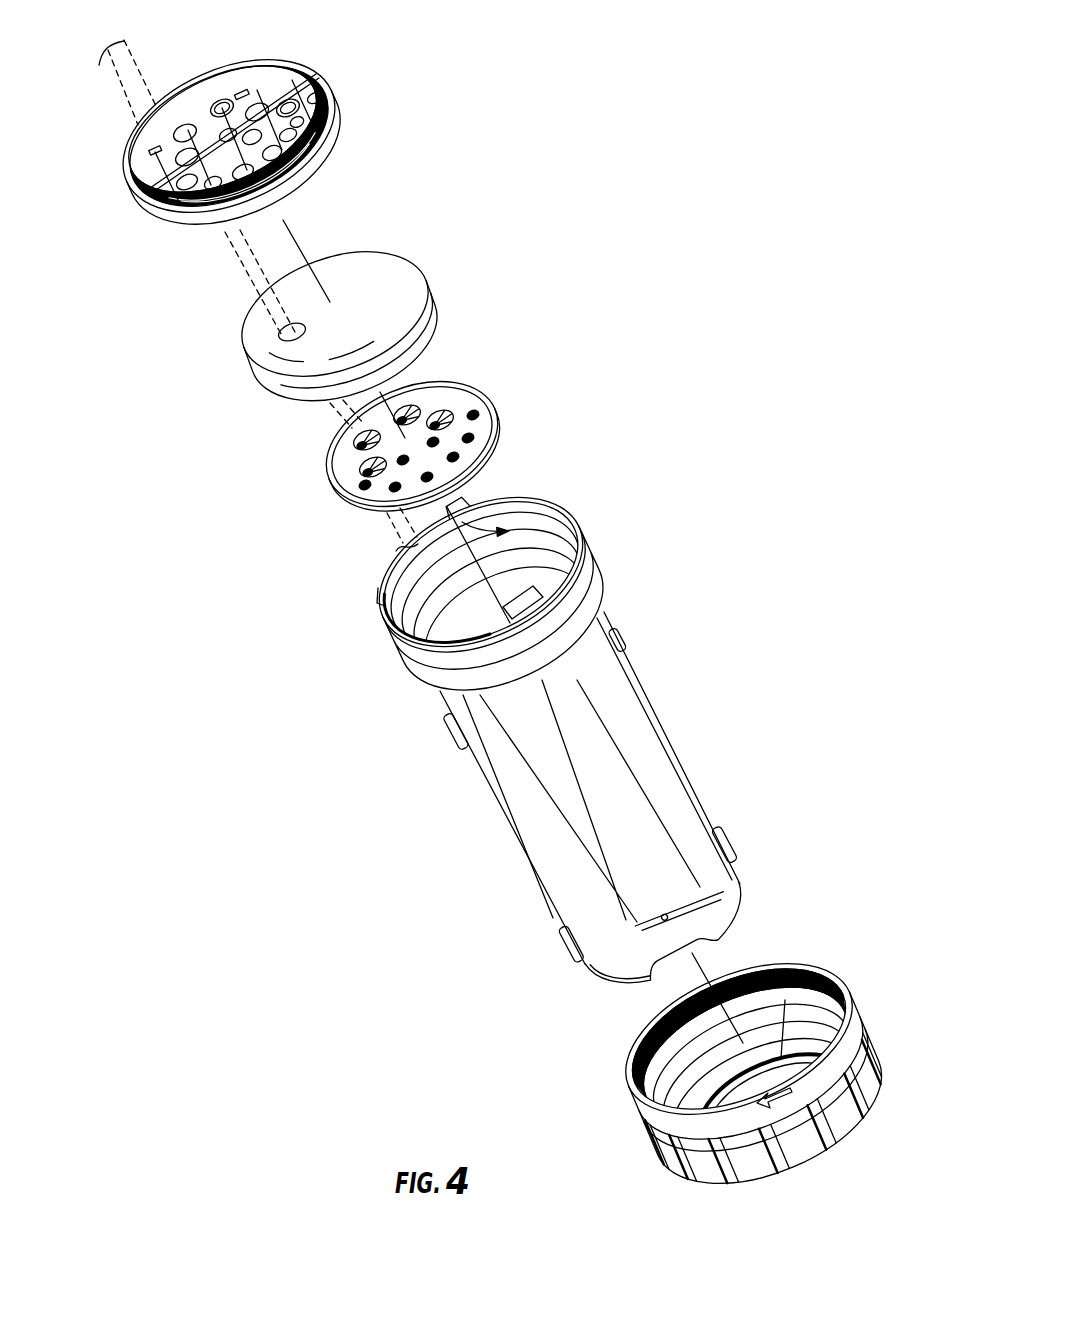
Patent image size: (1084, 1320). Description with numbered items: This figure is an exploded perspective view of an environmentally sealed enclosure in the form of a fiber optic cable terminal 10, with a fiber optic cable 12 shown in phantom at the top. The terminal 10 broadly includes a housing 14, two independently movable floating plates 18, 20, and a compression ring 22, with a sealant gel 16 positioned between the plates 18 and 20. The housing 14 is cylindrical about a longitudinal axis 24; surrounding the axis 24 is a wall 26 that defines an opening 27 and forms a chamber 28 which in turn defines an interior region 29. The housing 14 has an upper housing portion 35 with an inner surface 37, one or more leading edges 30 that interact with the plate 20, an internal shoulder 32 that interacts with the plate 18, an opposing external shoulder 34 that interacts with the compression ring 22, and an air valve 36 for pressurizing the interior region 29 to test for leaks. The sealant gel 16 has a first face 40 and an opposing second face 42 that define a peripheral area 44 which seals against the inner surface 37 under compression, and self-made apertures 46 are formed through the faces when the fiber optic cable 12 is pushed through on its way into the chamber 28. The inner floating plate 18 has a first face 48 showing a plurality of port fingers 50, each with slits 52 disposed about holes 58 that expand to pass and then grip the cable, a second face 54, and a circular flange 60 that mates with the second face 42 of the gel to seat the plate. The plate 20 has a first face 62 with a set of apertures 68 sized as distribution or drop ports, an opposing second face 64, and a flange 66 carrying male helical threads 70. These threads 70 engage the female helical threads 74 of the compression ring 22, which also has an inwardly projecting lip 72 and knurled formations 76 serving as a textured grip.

The fiber optic cable terminal 10 is at (545, 160).
The fiber optic cable 12 is at (120, 103).
The housing 14 is at (543, 719).
The sealant gel 16 is at (300, 323).
The inner floating plate 18 is at (392, 435).
The floating plate 20 is at (254, 132).
The compression ring 22 is at (757, 1070).
The longitudinal axis 24 is at (484, 575).
The wall 26 is at (584, 810).
The opening 27 is at (406, 590).
The chamber 28 is at (485, 580).
The interior region 29 is at (590, 807).
The leading edges 30 is at (496, 604).
The internal shoulder 32 is at (497, 608).
The external shoulder 34 is at (506, 626).
The upper housing portion 35 is at (481, 572).
The air valve 36 is at (670, 938).
The inner surface 37 is at (457, 507).
The first face 40 is at (318, 323).
The second face 42 is at (359, 348).
The peripheral area 44 is at (349, 352).
The self-made apertures 46 is at (285, 335).
The first face 48 is at (440, 436).
The port fingers 50 is at (356, 466).
The slits 52 is at (337, 497).
The second face 54 is at (468, 402).
The holes 58 is at (437, 395).
The flange 60 is at (478, 408).
The first face 62 is at (228, 136).
The second face 64 is at (245, 172).
The flange 66 is at (229, 136).
The apertures 68 is at (222, 108).
The male helical threads 70 is at (288, 108).
The inwardly projecting lip 72 is at (750, 1065).
The female helical threads 74 is at (739, 1039).
The knurled formations 76 is at (643, 1040).